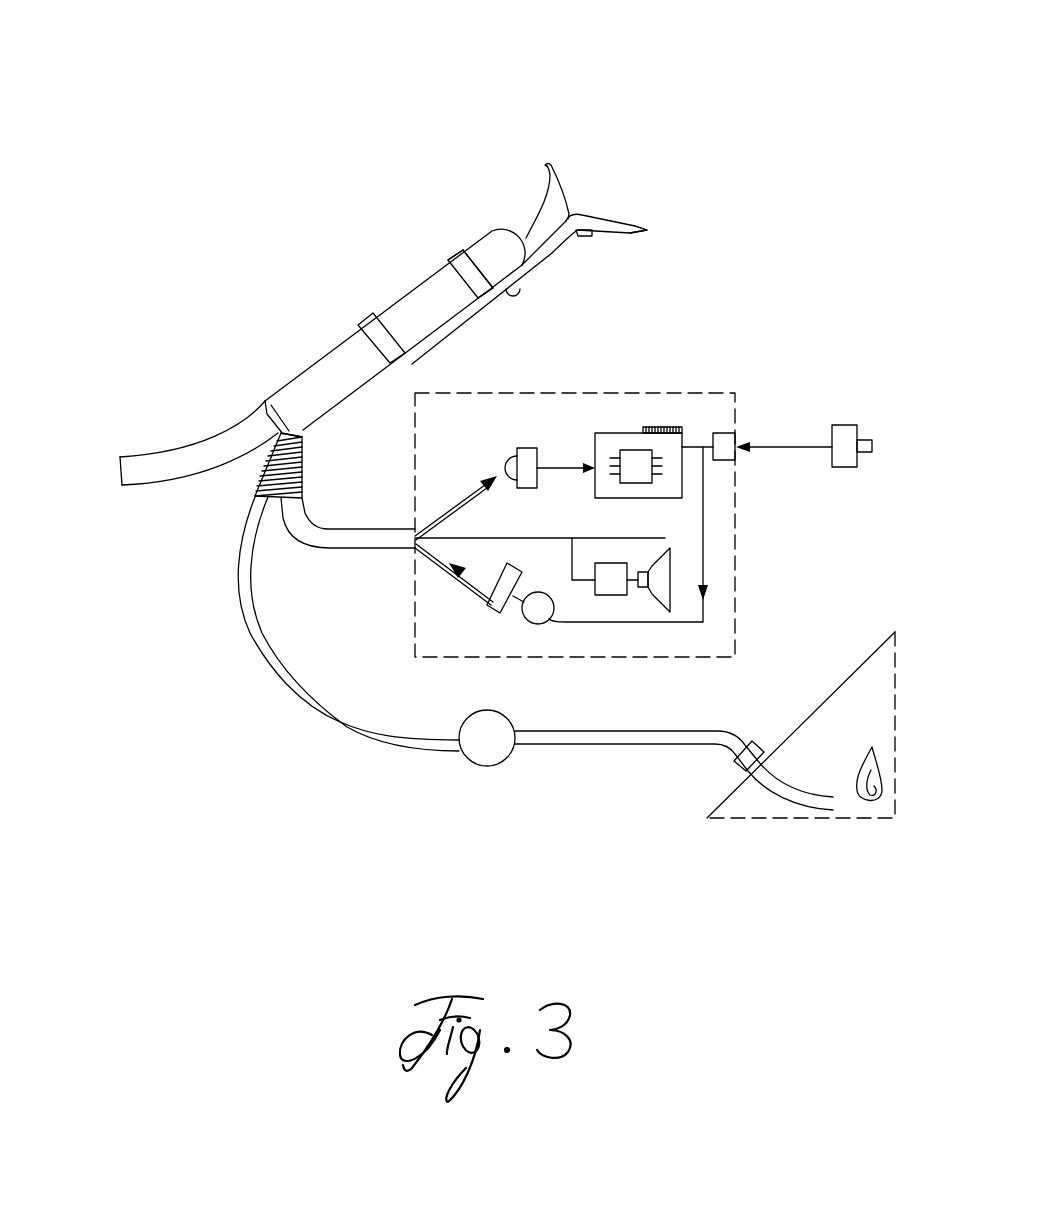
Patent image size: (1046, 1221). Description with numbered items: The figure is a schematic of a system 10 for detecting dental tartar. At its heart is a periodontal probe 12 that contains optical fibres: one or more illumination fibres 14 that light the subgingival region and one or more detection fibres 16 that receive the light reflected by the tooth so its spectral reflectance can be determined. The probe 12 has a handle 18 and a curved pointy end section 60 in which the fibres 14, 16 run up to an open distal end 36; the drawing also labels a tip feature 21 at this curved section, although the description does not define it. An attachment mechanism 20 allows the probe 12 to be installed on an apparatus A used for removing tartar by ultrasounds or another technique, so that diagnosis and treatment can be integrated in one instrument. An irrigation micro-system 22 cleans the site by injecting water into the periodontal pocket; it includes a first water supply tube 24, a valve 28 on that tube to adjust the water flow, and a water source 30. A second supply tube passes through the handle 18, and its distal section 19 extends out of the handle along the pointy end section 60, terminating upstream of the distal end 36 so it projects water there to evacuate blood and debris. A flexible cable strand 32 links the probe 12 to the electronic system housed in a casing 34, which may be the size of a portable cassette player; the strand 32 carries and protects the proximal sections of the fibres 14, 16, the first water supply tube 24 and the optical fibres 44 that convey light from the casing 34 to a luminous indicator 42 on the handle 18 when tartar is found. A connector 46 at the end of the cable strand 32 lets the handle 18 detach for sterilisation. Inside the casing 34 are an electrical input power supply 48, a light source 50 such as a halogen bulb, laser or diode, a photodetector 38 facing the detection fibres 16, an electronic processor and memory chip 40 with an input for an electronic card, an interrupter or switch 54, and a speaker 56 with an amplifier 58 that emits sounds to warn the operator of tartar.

The system 10 is at (160, 612).
The periodontal probe 12 is at (608, 204).
The illumination fibres 14 is at (440, 566).
The detection fibres 16 is at (452, 512).
The handle 18 is at (388, 374).
The distal section of second water supply tube 19 is at (578, 237).
The attachment mechanism 20 is at (455, 256).
The curved hook tip 21 is at (567, 214).
The irrigation micro-system 22 is at (284, 698).
The first water supply tube 24 is at (257, 641).
The valve 28 is at (482, 762).
The water source 30 is at (855, 802).
The cable strand 32 is at (260, 478).
The casing 34 is at (740, 598).
The distal end 36 is at (650, 232).
The photodetector 38 is at (528, 448).
The electronic processor and memory chip 40 is at (633, 430).
The luminous indicator 42 is at (517, 300).
The optical fibres 44 is at (413, 553).
The connector 46 is at (293, 433).
The electrical input power supply 48 is at (843, 462).
The light source 50 is at (533, 614).
The interrupter or switch 54 is at (722, 440).
The speaker 56 is at (657, 600).
The amplifier 58 is at (610, 587).
The curved pointy end section 60 is at (625, 217).
The apparatus for removing dental tartar A is at (568, 155).